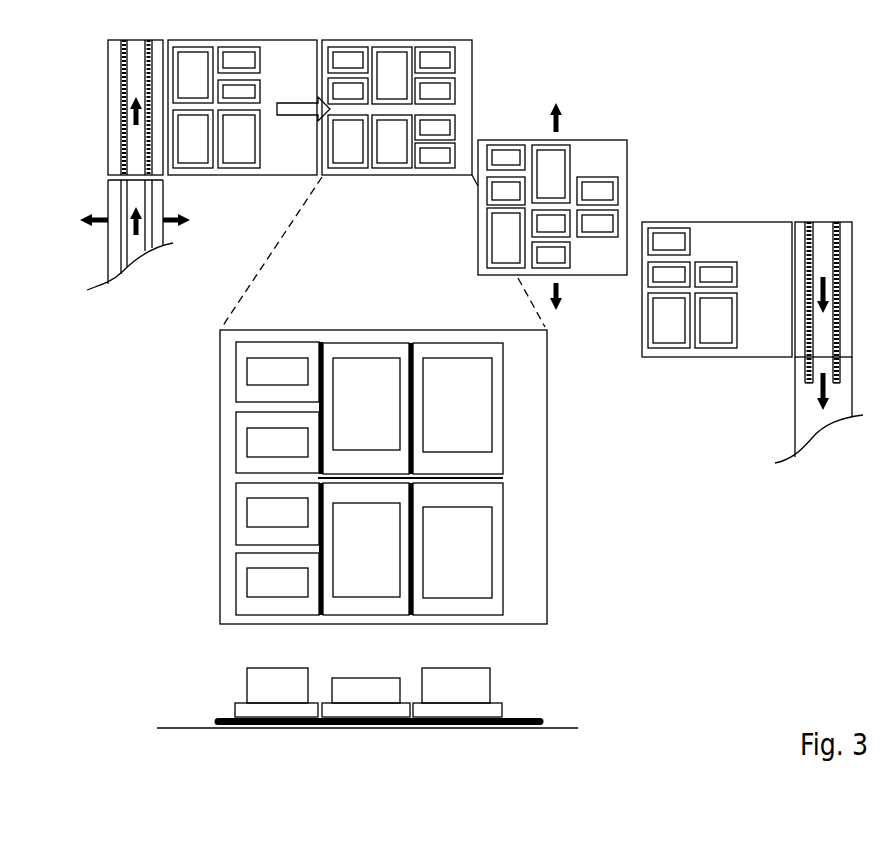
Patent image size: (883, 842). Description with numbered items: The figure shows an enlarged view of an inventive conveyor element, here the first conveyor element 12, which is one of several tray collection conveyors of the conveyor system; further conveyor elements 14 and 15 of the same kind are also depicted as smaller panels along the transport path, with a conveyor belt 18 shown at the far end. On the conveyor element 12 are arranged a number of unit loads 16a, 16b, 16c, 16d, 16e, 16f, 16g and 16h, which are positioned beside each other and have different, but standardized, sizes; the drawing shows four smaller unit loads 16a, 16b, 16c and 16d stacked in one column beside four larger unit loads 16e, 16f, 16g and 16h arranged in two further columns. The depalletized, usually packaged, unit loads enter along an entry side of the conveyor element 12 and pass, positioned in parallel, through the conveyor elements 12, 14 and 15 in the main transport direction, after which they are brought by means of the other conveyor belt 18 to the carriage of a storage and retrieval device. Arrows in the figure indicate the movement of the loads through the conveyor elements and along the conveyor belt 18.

The conveyor element 12 is at (223, 437).
The conveyor element 14 is at (605, 172).
The conveyor element 15 is at (760, 247).
The unit load 16a is at (277, 372).
The unit load 16b is at (277, 442).
The unit load 16c is at (277, 514).
The unit load 16d is at (277, 584).
The unit load 16e is at (366, 408).
The unit load 16f is at (366, 549).
The unit load 16g is at (458, 408).
The unit load 16h is at (458, 549).
The conveyor belt 18 is at (813, 220).